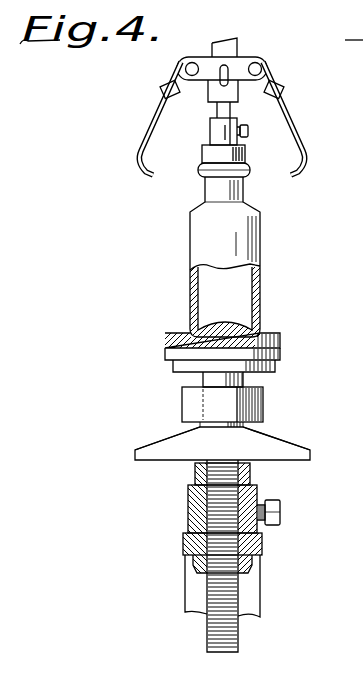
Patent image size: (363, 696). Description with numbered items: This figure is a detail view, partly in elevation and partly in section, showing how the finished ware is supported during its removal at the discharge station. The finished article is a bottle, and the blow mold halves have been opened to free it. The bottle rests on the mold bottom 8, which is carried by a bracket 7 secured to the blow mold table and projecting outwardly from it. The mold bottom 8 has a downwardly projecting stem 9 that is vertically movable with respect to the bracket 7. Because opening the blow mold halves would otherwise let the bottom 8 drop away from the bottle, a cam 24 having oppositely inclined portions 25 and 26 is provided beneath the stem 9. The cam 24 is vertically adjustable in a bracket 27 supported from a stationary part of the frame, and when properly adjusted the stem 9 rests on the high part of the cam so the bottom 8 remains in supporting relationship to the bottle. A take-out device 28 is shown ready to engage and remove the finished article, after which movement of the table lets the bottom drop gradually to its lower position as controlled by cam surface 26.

The bracket 7 is at (265, 400).
The mold bottom 8 is at (165, 348).
The stem 9 is at (210, 378).
The cam 24 is at (178, 447).
The inclined portion 25 is at (175, 441).
The inclined portion 26 is at (294, 444).
The bracket 27 is at (188, 520).
The take-out device 28 is at (290, 110).